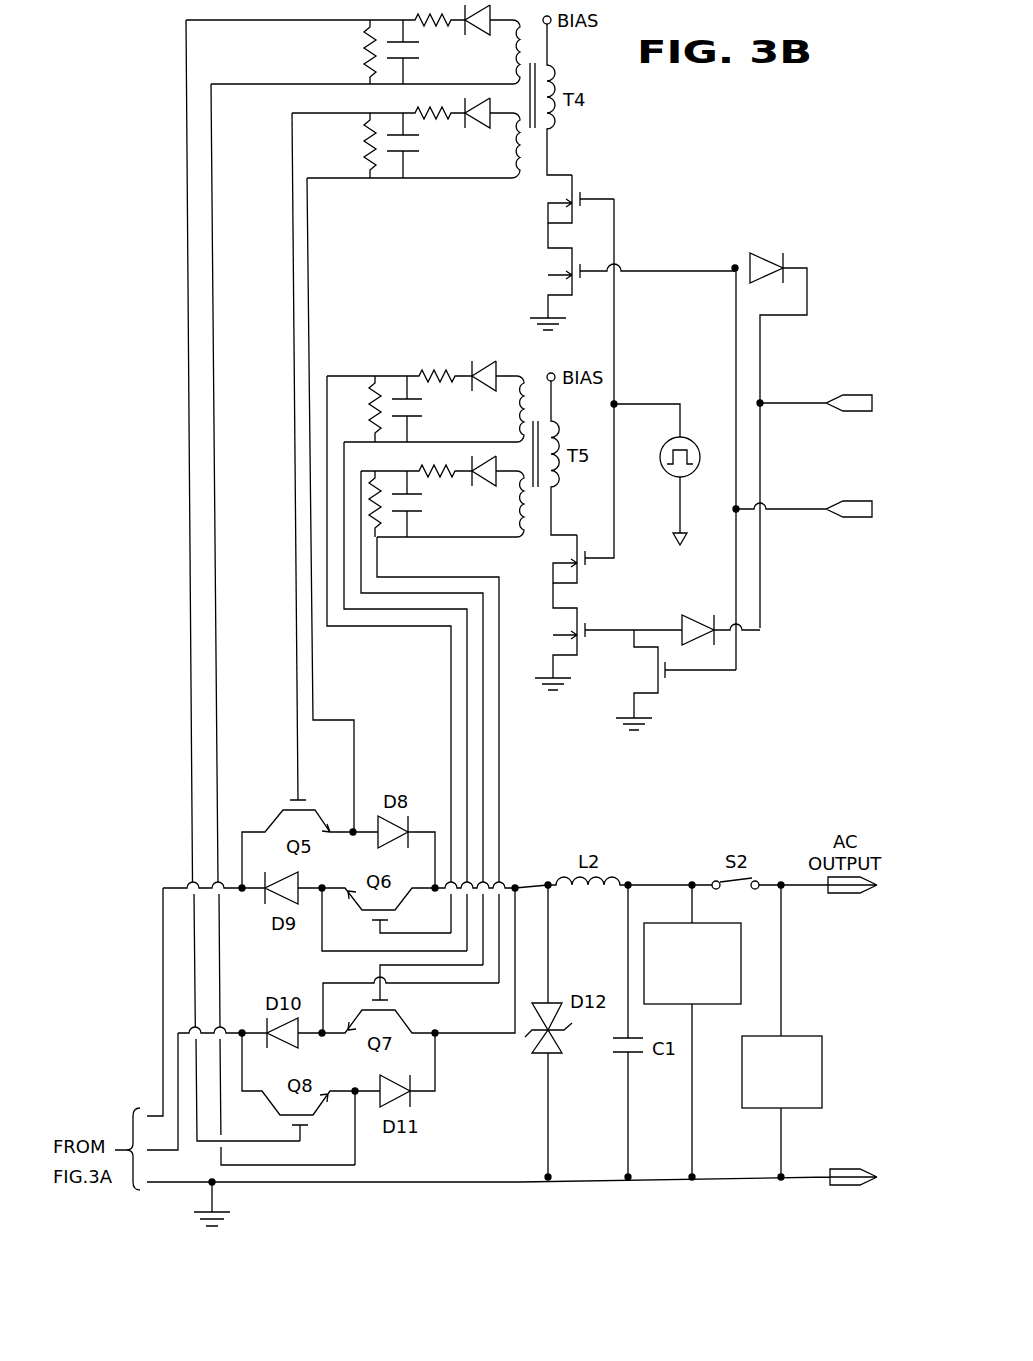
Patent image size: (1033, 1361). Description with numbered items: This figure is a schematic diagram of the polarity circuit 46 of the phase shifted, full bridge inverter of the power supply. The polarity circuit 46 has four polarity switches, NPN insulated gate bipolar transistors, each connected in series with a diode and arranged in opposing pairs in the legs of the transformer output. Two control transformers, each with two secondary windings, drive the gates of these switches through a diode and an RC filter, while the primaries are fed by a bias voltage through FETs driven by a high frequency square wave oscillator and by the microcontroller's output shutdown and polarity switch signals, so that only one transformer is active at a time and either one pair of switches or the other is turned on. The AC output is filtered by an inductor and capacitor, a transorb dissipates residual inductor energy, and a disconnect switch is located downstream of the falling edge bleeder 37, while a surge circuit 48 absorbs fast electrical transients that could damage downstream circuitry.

The polarity circuit 46 is at (766, 151).
The falling edge bleeder 37 is at (712, 922).
The surge circuit 48 is at (800, 1036).